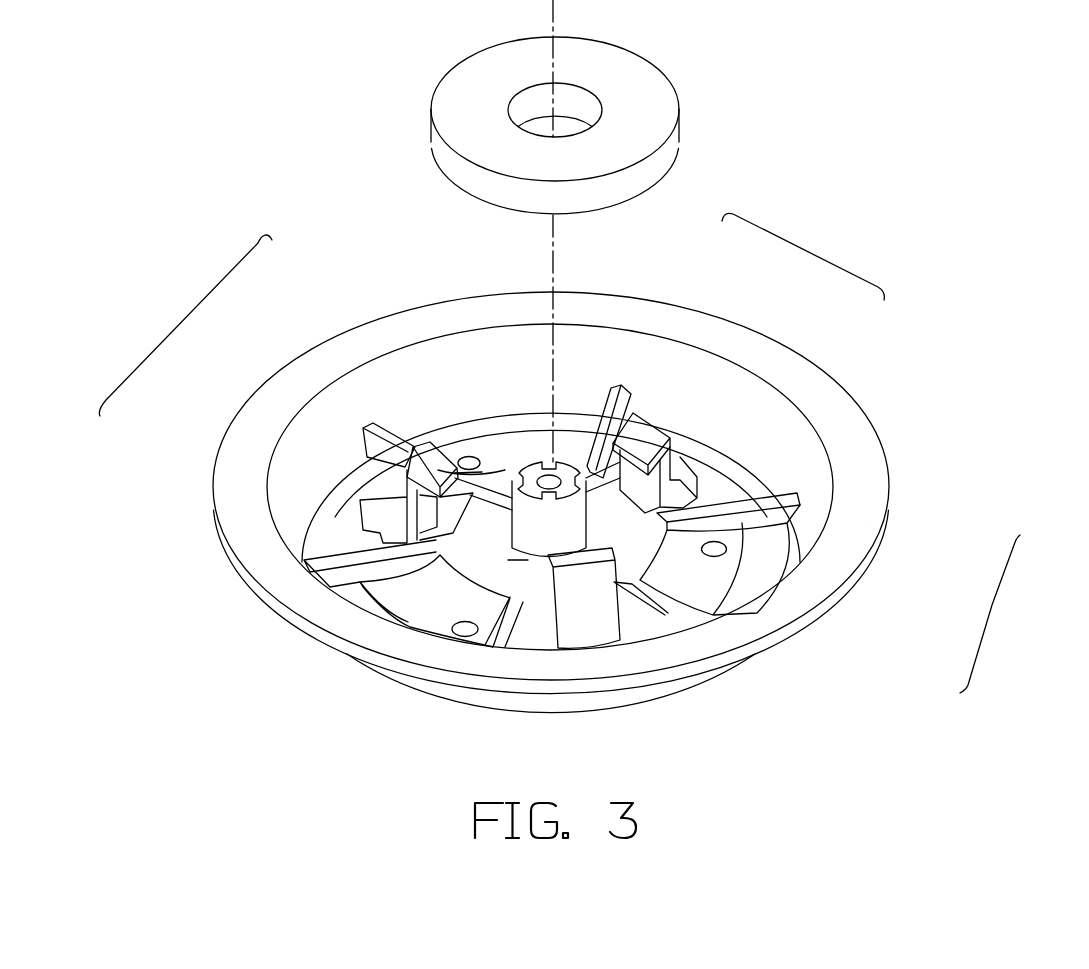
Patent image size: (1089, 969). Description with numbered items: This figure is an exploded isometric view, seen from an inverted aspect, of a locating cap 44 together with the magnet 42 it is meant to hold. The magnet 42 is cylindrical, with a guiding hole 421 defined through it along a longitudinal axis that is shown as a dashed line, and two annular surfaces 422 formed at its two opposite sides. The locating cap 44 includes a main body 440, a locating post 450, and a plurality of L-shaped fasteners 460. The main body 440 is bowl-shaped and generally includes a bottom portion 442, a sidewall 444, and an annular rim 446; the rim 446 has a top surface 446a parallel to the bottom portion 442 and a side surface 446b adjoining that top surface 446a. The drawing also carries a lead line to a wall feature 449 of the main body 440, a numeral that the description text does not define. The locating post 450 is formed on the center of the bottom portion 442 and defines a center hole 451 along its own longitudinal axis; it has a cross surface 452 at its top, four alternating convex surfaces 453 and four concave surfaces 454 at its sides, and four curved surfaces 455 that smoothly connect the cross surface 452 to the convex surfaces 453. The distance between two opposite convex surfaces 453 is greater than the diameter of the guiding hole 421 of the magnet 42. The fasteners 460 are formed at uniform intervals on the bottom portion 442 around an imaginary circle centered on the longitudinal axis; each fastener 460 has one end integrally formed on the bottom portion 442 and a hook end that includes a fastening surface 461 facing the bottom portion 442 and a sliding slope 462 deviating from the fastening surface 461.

The magnet 42 is at (697, 117).
The guiding hole 421 is at (540, 128).
The annular surfaces 422 is at (434, 165).
The locating cap 44 is at (907, 479).
The main body 440 is at (1011, 614).
The bottom portion 442 is at (703, 590).
The sidewall 444 is at (807, 518).
The rim 446 is at (860, 527).
The top surface 446a is at (255, 548).
The side surface 446b is at (250, 597).
The side wall 449 is at (782, 497).
The locating post 450 is at (449, 441).
The center hole 451 is at (536, 478).
The cross surface 452 is at (455, 472).
The convex surfaces 453 is at (362, 452).
The concave surfaces 454 is at (362, 493).
The curved surfaces 455 is at (510, 475).
The L-shaped fasteners 460 is at (803, 253).
The fastening surface 461 is at (772, 497).
The sliding slope 462 is at (640, 442).